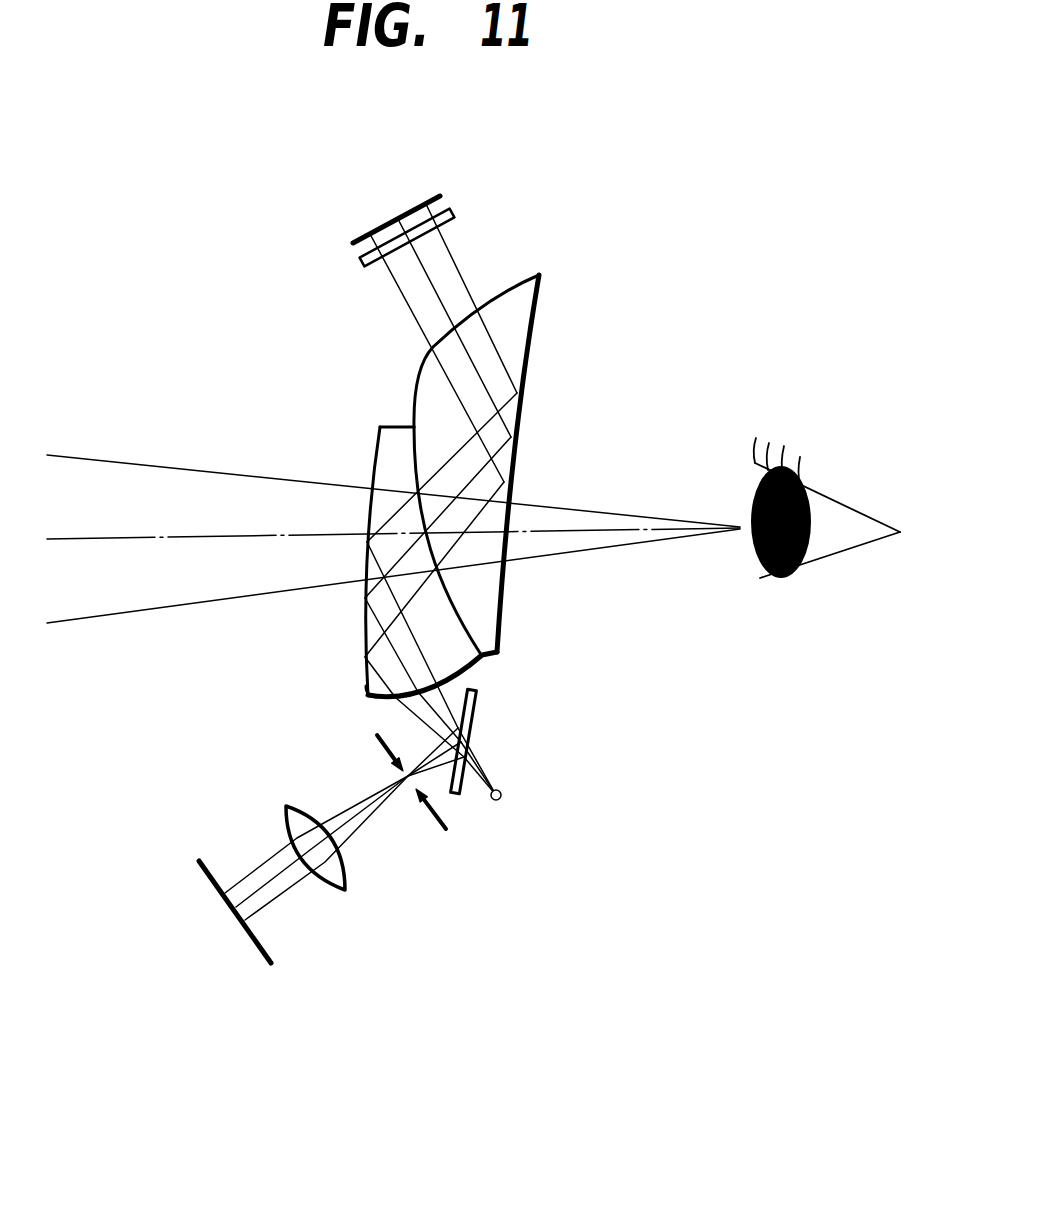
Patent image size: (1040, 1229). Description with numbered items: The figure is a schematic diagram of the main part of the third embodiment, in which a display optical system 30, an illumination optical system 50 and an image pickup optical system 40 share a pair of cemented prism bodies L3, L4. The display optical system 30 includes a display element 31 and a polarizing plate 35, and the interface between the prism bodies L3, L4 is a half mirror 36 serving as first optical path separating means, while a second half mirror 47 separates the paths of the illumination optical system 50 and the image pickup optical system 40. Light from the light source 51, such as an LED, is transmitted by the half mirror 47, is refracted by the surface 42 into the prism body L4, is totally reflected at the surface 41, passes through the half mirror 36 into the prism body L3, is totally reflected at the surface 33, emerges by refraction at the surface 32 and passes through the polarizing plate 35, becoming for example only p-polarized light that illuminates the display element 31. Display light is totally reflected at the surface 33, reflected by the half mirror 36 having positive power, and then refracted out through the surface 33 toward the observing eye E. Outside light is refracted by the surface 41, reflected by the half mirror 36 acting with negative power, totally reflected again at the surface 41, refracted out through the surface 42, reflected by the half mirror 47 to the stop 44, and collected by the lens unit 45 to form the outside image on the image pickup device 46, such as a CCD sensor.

The display optical system 30 is at (610, 229).
The display element 31 is at (402, 214).
The surface 32 is at (519, 277).
The surface 33 is at (529, 326).
The polarizing plate 35 is at (451, 209).
The half mirror 36 is at (466, 628).
The image pickup optical system 40 is at (242, 747).
The surface 41 is at (366, 628).
The surface 42 is at (391, 699).
The stop 44 is at (443, 830).
The lens unit 45 is at (345, 889).
The image pickup device 46 is at (262, 951).
The half mirror 47 is at (478, 703).
The illumination optical system 50 is at (566, 756).
The light source 51 is at (502, 797).
The prism body L3 is at (489, 583).
The prism body L4 is at (390, 450).
The observing eye E is at (842, 553).